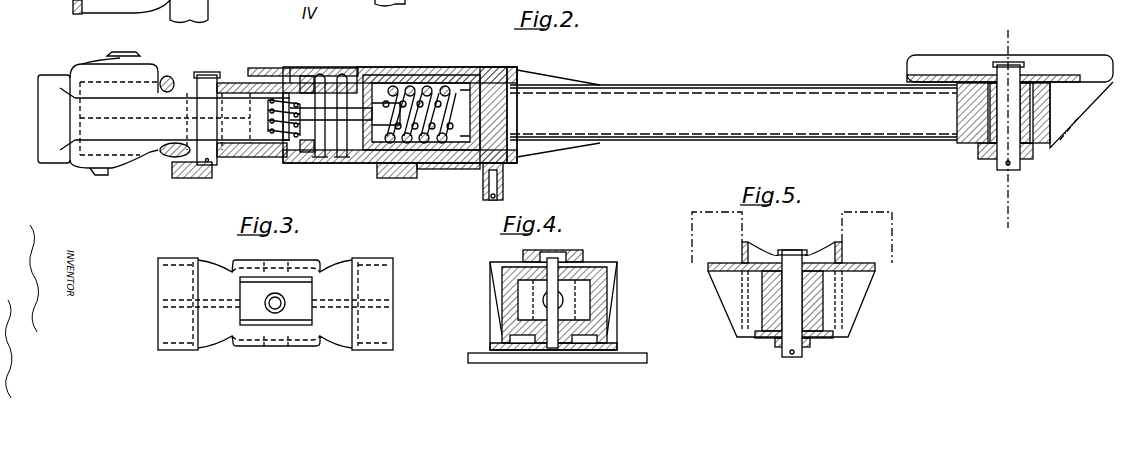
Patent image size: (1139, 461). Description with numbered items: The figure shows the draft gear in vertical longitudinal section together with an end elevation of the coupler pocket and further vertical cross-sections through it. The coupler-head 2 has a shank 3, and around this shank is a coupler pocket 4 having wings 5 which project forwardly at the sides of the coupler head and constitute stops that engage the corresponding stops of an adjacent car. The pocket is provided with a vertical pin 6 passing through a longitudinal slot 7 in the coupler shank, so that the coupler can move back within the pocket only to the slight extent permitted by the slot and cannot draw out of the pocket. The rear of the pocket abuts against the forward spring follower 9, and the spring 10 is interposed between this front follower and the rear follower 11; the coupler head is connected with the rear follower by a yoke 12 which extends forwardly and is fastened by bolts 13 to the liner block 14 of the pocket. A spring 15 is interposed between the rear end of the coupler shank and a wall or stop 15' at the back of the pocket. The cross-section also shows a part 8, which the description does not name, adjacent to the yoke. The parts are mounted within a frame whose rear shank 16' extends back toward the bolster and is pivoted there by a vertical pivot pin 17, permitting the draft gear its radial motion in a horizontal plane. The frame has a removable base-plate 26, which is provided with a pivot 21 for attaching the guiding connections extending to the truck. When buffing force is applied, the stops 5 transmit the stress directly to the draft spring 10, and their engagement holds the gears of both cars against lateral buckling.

In FIG. 2, the coupler-head 2 is at (164, 113).
In FIG. 2, the shank 3 is at (287, 112).
In FIG. 2, the coupler pocket 4 is at (228, 158).
In FIG. 3, the wings 5 is at (275, 304).
In FIG. 2, the vertical pin 6 is at (207, 82).
In FIG. 2, the longitudinal slot 7 is at (187, 107).
In FIG. 4, the housing wall 8 is at (607, 297).
In FIG. 2, the forward spring follower 9 is at (365, 80).
In FIG. 2, the spring 10 is at (430, 84).
In FIG. 2, the rear follower 11 is at (465, 82).
In FIG. 2, the yoke 12 is at (400, 82).
In FIG. 4, the yoke 12 is at (565, 258).
In FIG. 2, the bolts 13 is at (321, 157).
In FIG. 4, the bolts 13 is at (553, 350).
In FIG. 2, the liner block 14 is at (343, 157).
In FIG. 4, the liner block 14 is at (562, 304).
In FIG. 2, the spring 15 is at (277, 143).
In FIG. 2, the wall or stop 15' is at (298, 132).
In FIG. 2, the rear shank 16' is at (733, 113).
In FIG. 2, the vertical pivot pin 17 is at (1014, 90).
In FIG. 5, the vertical pivot pin 17 is at (792, 335).
In FIG. 2, the pivot 21 is at (503, 186).
In FIG. 2, the removable base-plate 26 is at (455, 164).
In FIG. 4, the removable base-plate 26 is at (592, 350).